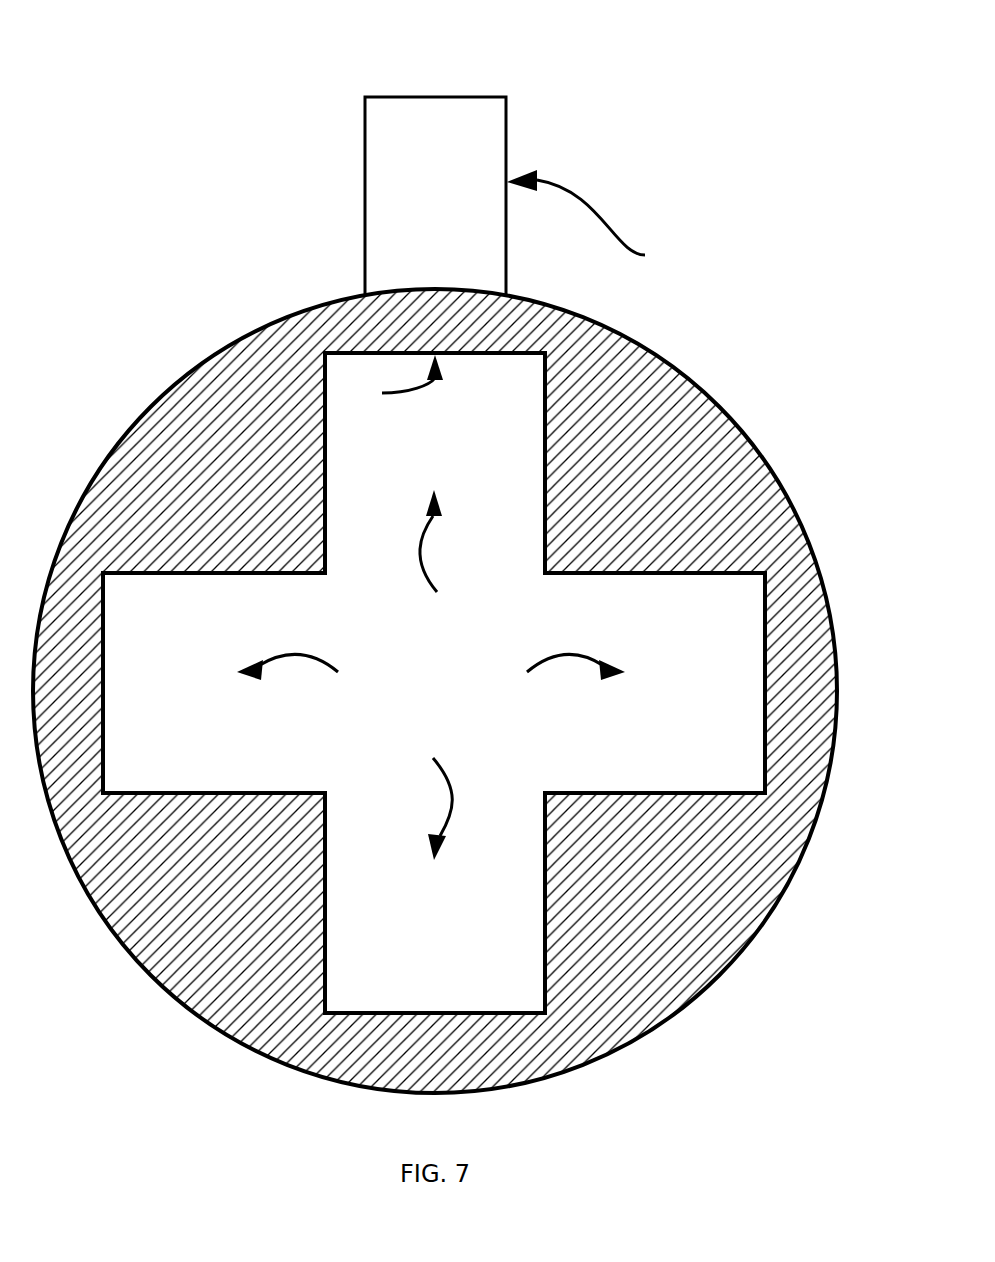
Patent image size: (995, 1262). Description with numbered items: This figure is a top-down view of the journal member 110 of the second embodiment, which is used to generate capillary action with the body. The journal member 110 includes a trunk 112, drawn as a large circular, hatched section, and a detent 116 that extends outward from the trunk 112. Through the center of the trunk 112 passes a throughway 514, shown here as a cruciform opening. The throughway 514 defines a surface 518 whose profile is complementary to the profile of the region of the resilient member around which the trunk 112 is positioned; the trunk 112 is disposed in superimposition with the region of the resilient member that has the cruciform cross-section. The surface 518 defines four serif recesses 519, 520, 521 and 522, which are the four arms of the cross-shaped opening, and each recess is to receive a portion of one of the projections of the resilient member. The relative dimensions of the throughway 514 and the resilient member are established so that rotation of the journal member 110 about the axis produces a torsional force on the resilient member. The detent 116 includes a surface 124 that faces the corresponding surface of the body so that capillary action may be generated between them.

The journal member 110 is at (436, 549).
The trunk 112 is at (722, 405).
The detent 116 is at (398, 115).
The surface 124 is at (597, 217).
The throughway 514 is at (457, 696).
The surface 518 is at (387, 381).
The serif recess 519 is at (437, 553).
The serif recess 520 is at (556, 668).
The serif recess 521 is at (438, 795).
The serif recess 522 is at (312, 668).